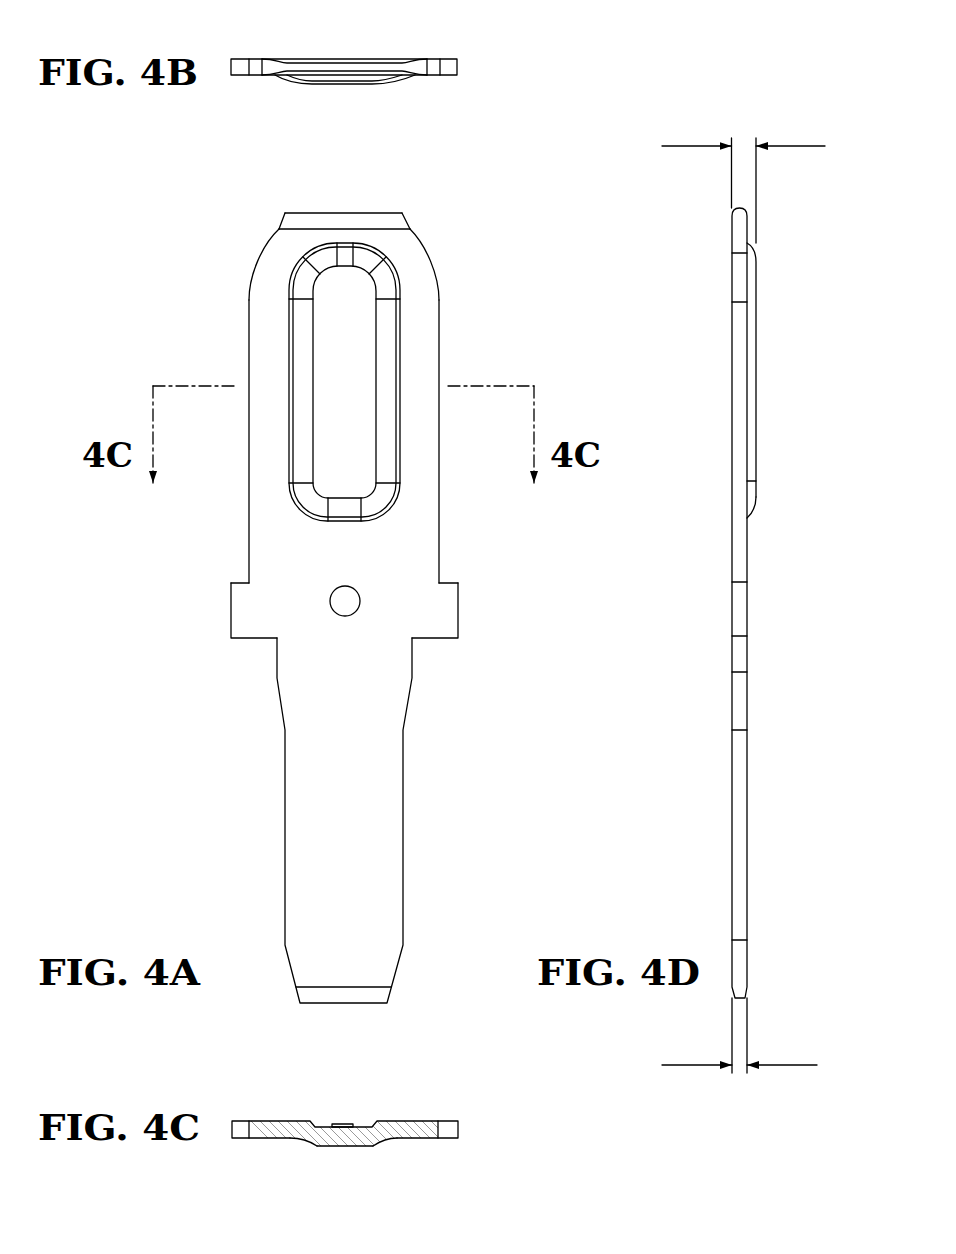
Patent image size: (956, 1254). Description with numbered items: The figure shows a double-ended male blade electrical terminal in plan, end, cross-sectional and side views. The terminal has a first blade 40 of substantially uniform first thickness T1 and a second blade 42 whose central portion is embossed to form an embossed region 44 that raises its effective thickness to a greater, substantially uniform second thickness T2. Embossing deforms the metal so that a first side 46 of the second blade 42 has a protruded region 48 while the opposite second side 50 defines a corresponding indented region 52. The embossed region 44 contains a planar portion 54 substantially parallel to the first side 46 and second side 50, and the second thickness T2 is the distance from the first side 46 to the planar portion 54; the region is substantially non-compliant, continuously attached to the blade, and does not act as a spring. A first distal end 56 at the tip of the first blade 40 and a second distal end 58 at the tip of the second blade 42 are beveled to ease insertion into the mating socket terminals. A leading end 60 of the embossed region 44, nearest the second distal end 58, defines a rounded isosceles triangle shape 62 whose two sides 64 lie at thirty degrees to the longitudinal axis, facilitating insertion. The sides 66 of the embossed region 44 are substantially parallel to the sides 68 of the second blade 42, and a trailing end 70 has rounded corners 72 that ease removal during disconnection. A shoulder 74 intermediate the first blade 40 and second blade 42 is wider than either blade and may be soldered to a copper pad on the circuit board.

In FIG. 4A, the first blade 40 is at (393, 815).
In FIG. 4D, the first blade 40 is at (732, 782).
In FIG. 4A, the second blade 42 is at (427, 387).
In FIG. 4D, the second blade 42 is at (732, 390).
In FIG. 4B, the embossed region 44 is at (298, 80).
In FIG. 4C, the embossed region 44 is at (316, 1147).
In FIG. 4D, the embossed region 44 is at (750, 252).
In FIG. 4B, the first side 46 is at (262, 78).
In FIG. 4C, the first side 46 is at (267, 1138).
In FIG. 4C, the protruded region 48 is at (392, 1142).
In FIG. 4D, the protruded region 48 is at (757, 498).
In FIG. 4A, the second side 50 is at (428, 302).
In FIG. 4B, the second side 50 is at (440, 59).
In FIG. 4C, the second side 50 is at (430, 1121).
In FIG. 4A, the indented region 52 is at (333, 308).
In FIG. 4C, the indented region 52 is at (352, 1126).
In FIG. 4B, the planar portion 54 is at (343, 80).
In FIG. 4C, the planar portion 54 is at (345, 1147).
In FIG. 4D, the planar portion 54 is at (750, 298).
In FIG. 4A, the first distal end 56 is at (322, 998).
In FIG. 4A, the second distal end 58 is at (369, 218).
In FIG. 4A, the leading end 60 is at (343, 253).
In FIG. 4A, the rounded isosceles triangle shape 62 is at (368, 248).
In FIG. 4A, the sides of the leading end 64 is at (318, 275).
In FIG. 4A, the sides of the embossed region 66 is at (288, 333).
In FIG. 4A, the sides of the second blade 68 is at (249, 470).
In FIG. 4A, the trailing end 70 is at (343, 510).
In FIG. 4A, the rounded corners 72 is at (297, 506).
In FIG. 4A, the shoulder 74 is at (231, 622).
In FIG. 4D, the first thickness T1 is at (740, 1067).
In FIG. 4D, the second thickness T2 is at (747, 147).